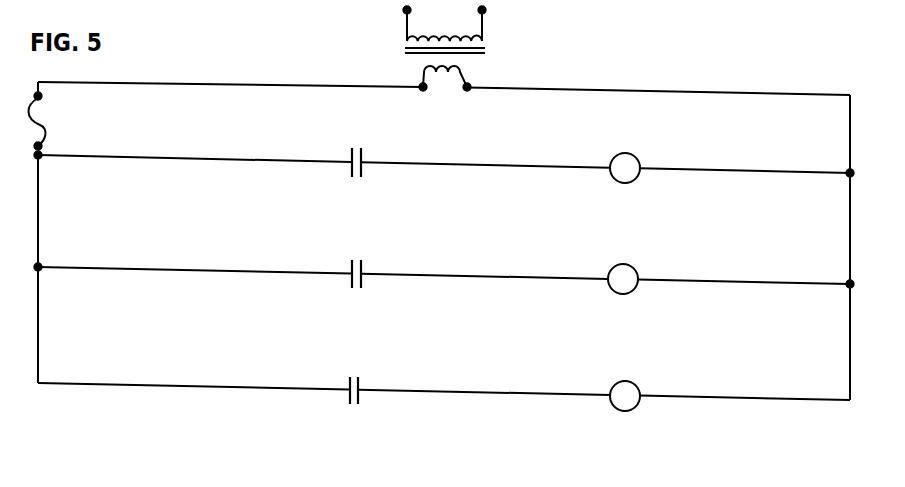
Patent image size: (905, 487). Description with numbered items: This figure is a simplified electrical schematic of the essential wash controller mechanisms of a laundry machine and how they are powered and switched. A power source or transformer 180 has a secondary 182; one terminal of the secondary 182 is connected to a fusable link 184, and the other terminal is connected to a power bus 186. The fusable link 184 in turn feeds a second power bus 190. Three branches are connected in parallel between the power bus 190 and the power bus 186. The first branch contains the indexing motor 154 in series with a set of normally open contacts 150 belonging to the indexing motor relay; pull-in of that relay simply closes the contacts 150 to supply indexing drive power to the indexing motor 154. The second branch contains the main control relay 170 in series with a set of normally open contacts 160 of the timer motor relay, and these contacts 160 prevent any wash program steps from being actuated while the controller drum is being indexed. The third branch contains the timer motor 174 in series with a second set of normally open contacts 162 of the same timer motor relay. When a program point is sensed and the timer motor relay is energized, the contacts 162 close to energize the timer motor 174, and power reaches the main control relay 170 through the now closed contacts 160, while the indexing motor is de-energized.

The normally open contacts 150 is at (363, 150).
The indexing motor 154 is at (640, 158).
The normally open contacts 160 is at (363, 262).
The second set of normally open contacts 162 is at (360, 382).
The main control relay 170 is at (637, 268).
The timer motor 174 is at (641, 389).
The transformer 180 is at (397, 42).
The secondary 182 is at (423, 68).
The fusable link 184 is at (47, 129).
The power bus 186 is at (849, 233).
The power bus 190 is at (38, 236).